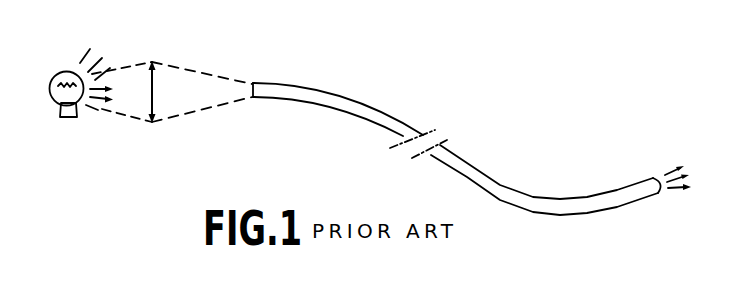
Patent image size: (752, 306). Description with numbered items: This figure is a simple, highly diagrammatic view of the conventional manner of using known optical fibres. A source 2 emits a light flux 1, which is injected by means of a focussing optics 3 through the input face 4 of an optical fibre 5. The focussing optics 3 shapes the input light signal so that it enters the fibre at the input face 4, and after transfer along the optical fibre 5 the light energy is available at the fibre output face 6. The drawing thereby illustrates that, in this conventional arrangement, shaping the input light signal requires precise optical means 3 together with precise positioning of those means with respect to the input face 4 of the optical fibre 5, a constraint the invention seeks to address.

The light flux 1 is at (96, 54).
The source 2 is at (62, 72).
The focussing optics 3 is at (155, 100).
The input face 4 is at (240, 80).
The optical fibre 5 is at (357, 102).
The output face 6 is at (658, 170).